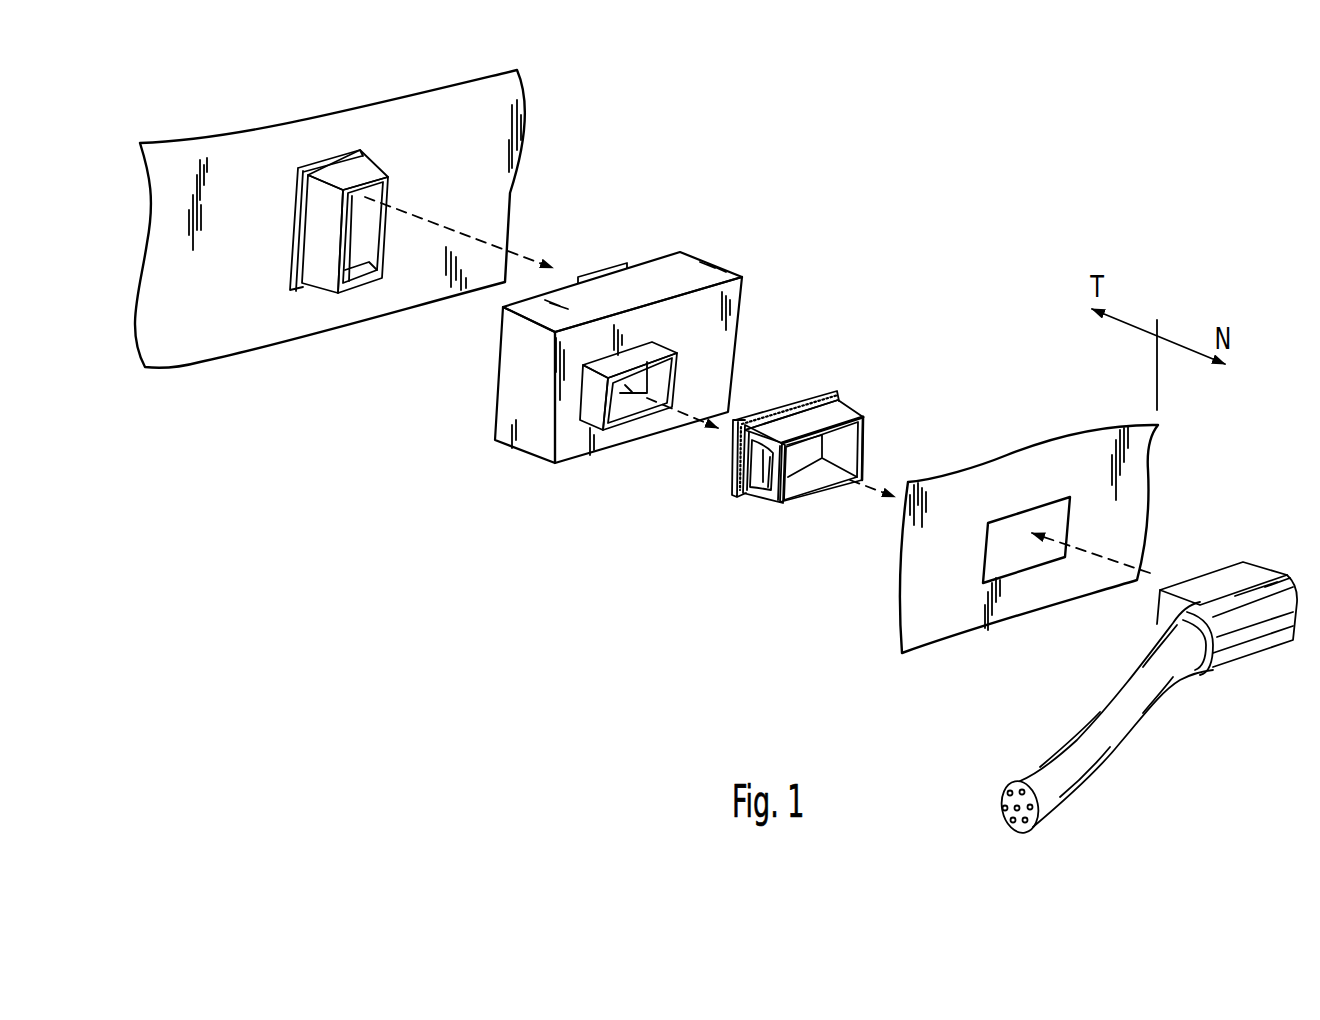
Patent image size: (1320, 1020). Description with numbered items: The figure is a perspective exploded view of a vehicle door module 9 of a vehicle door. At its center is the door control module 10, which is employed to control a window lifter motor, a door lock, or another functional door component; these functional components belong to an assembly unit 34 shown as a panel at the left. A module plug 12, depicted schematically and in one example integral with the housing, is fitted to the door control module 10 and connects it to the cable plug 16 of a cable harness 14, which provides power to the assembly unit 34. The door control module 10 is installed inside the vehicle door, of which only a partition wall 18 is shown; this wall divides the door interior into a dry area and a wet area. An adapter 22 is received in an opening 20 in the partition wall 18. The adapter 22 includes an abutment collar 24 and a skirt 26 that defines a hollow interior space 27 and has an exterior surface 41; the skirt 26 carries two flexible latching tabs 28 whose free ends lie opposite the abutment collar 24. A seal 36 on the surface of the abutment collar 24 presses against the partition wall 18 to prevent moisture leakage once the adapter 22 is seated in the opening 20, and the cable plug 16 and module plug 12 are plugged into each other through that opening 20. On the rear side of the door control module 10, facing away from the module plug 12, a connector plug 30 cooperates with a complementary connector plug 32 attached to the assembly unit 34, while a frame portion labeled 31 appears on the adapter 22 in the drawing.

The vehicle door module 9 is at (886, 154).
The door control module 10 is at (618, 349).
The module plug 12 is at (623, 415).
The cable harness 14 is at (1097, 760).
The cable plug 16 is at (1237, 643).
The partition wall 18 is at (999, 546).
The opening 20 is at (1027, 573).
The adapter 22 is at (809, 468).
The abutment collar 24 is at (830, 395).
The skirt 26 is at (757, 497).
The hollow interior space 27 is at (808, 477).
The flexible latching tabs 28 is at (753, 458).
The connector plug 30 is at (613, 262).
The frame 31 is at (865, 452).
The complementary connector plug 32 is at (360, 288).
The assembly unit 34 is at (515, 197).
The seal 36 is at (843, 402).
The exterior surface 41 is at (798, 430).